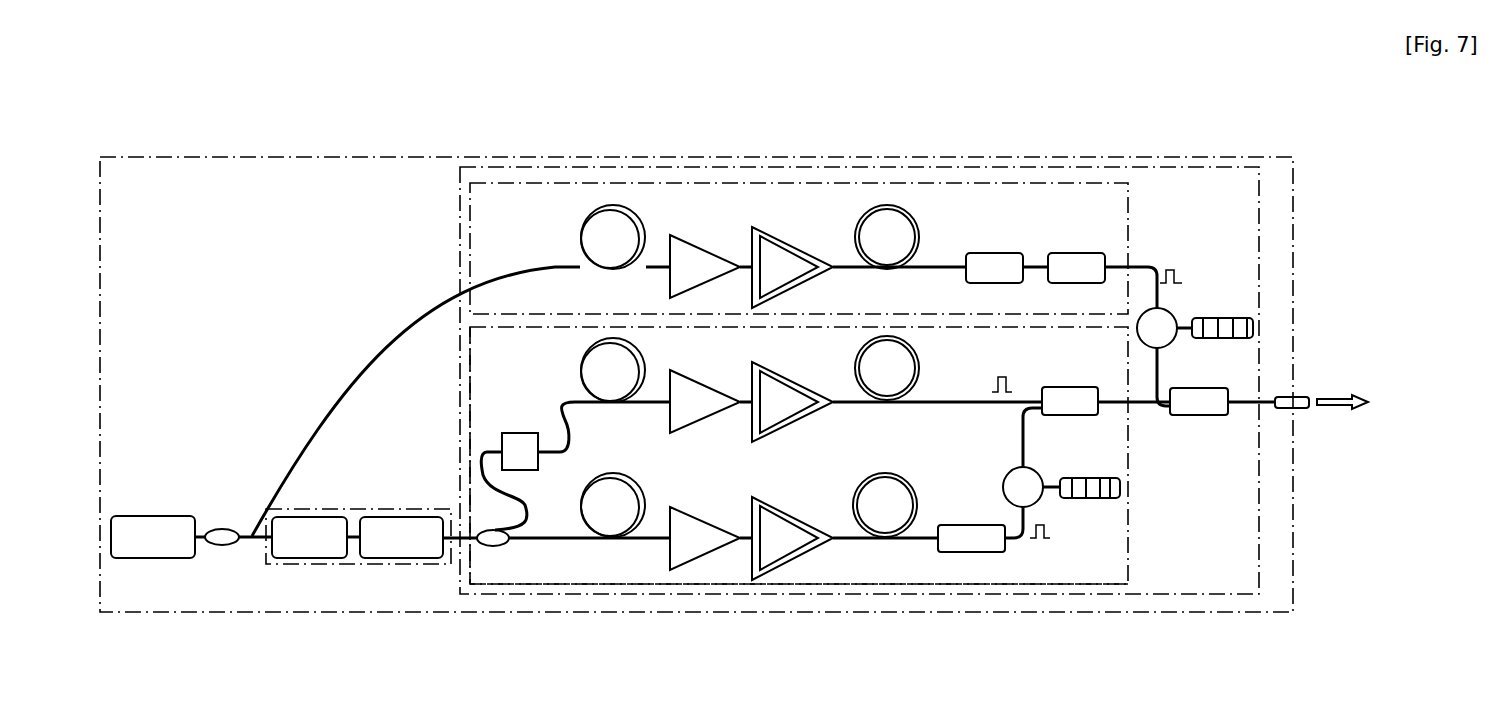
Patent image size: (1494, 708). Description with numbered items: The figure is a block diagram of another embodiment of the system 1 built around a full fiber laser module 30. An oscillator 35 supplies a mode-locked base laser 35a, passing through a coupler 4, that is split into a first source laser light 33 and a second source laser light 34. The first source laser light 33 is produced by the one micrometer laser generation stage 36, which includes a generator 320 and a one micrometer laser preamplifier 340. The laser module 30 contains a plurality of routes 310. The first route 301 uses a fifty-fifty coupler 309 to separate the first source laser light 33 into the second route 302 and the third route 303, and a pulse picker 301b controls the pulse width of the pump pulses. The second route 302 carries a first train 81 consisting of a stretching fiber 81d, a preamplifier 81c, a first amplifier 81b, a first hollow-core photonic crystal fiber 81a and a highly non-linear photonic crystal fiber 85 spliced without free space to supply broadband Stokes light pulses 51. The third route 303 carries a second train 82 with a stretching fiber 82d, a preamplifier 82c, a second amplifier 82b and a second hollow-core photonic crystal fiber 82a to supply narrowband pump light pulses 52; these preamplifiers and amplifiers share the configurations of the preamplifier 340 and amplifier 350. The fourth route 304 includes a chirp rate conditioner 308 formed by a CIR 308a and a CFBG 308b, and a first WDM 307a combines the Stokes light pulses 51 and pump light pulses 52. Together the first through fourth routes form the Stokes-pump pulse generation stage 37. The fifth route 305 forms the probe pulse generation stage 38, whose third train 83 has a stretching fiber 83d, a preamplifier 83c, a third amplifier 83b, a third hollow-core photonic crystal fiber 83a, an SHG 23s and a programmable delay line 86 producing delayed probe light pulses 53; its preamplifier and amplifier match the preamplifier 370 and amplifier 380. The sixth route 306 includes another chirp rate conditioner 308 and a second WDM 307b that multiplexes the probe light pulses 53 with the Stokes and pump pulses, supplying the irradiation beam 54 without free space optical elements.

The system 1 is at (1026, 98).
The coupler 4 is at (202, 530).
The laser module 30 is at (318, 197).
The first source laser light 33 is at (458, 540).
The second source laser light 34 is at (357, 355).
The oscillator 35 is at (140, 515).
The base laser 35a is at (221, 504).
The 1 µm laser generation stage 36 is at (353, 565).
The Stokes-pump pulse generation stage 37 is at (885, 581).
The probe pulse generation stage 38 is at (496, 195).
The Stokes light pulses 51 is at (1043, 541).
The pump light pulses 52 is at (1000, 376).
The probe light pulses 53 is at (1168, 268).
The irradiation beam 54 is at (1337, 410).
The first train 81 is at (908, 564).
The first hollow-core photonic crystal fiber 81a is at (855, 495).
The first amplifier 81b is at (797, 555).
The preamplifier 81c is at (723, 552).
The stretching fiber 81d is at (645, 500).
The second train 82 is at (866, 327).
The second hollow-core photonic crystal fiber 82a is at (920, 370).
The second amplifier 82b is at (783, 388).
The preamplifier 82c is at (690, 388).
The stretching fiber 82d is at (580, 365).
The third train 83 is at (828, 222).
The third hollow-core photonic crystal fiber 83a is at (882, 206).
The third amplifier 83b is at (783, 238).
The preamplifier 83c is at (685, 238).
The stretching fiber 83d is at (610, 205).
The highly non-linear photonic crystal fiber 85 is at (966, 553).
The programmable delay line 86 is at (1062, 252).
The SHG 23s is at (978, 252).
The first route 301 is at (537, 488).
The pulse picker 301b is at (520, 432).
The second route 302 is at (1022, 552).
The third route 303 is at (930, 426).
The fourth route 304 is at (1062, 519).
The fifth route 305 is at (940, 236).
The sixth route 306 is at (1210, 280).
The first WDM 307a is at (1060, 386).
The second WDM 307b is at (1202, 416).
The chirp rate conditioner 308 is at (1227, 301).
The CIR 308a is at (1165, 342).
The CFBG 308b is at (1255, 331).
The 50/50 coupler 309 is at (493, 547).
The plurality of routes 310 is at (1062, 172).
The generator 320 is at (302, 559).
The 1 µm laser preamplifier 340 is at (405, 559).
The amplifier 350 is at (803, 390).
The preamplifier 370 is at (705, 248).
The amplifier 380 is at (798, 240).